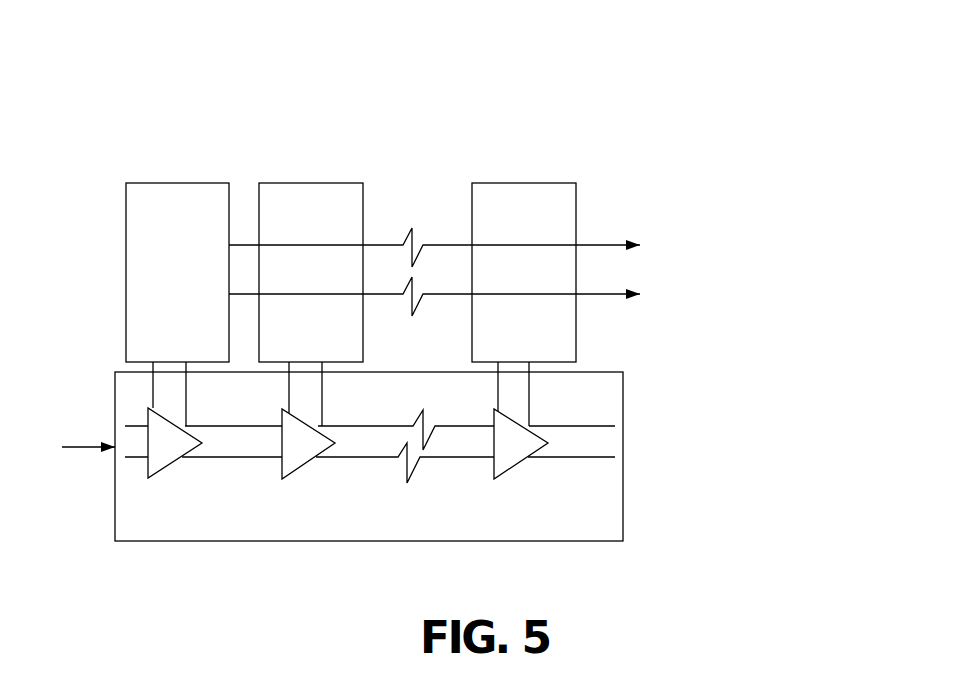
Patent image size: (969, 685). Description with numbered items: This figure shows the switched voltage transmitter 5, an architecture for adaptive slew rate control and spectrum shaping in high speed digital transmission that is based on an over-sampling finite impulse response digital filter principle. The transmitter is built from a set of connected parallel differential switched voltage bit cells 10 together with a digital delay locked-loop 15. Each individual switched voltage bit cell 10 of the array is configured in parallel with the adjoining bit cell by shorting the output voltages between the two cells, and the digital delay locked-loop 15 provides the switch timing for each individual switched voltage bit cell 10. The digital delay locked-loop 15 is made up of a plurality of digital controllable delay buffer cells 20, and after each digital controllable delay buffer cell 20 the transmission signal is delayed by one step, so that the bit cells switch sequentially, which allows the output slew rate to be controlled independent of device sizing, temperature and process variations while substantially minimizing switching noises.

The switched voltage transmitter 5 is at (544, 109).
The switched voltage bit cell 10 is at (586, 177).
The digital delay locked-loop 15 is at (633, 409).
The digital controllable delay buffer cell 20 is at (150, 473).